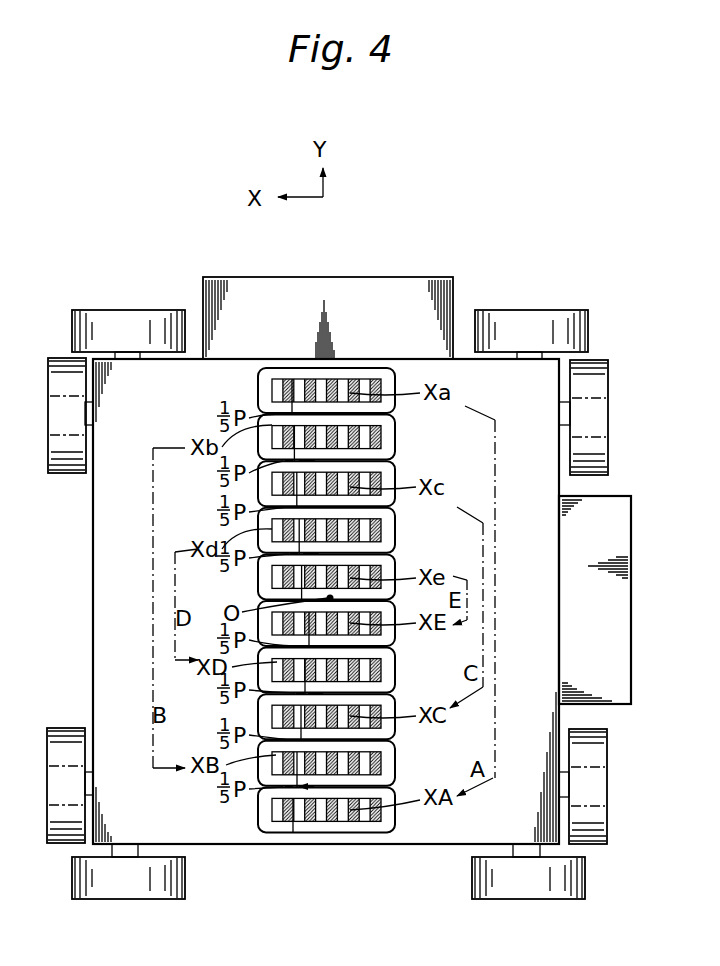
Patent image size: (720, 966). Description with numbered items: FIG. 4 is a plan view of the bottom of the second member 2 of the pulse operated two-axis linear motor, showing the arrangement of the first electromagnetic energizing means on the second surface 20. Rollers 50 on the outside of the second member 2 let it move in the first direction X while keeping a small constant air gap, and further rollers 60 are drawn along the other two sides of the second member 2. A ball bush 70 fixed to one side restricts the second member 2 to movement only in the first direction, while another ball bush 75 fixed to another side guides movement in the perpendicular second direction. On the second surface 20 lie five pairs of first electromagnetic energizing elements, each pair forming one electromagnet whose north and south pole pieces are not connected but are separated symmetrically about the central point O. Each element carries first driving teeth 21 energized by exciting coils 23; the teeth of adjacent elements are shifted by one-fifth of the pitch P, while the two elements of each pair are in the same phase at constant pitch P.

The second member 2 is at (90, 587).
The second surface 20 is at (518, 829).
The first driving teeth 21 is at (283, 392).
The exciting coils 23 is at (283, 487).
The roller 50 is at (108, 320).
The roller (Y direction) 60 is at (68, 462).
The ball bush 70 is at (381, 288).
The ball bush 75 is at (618, 705).